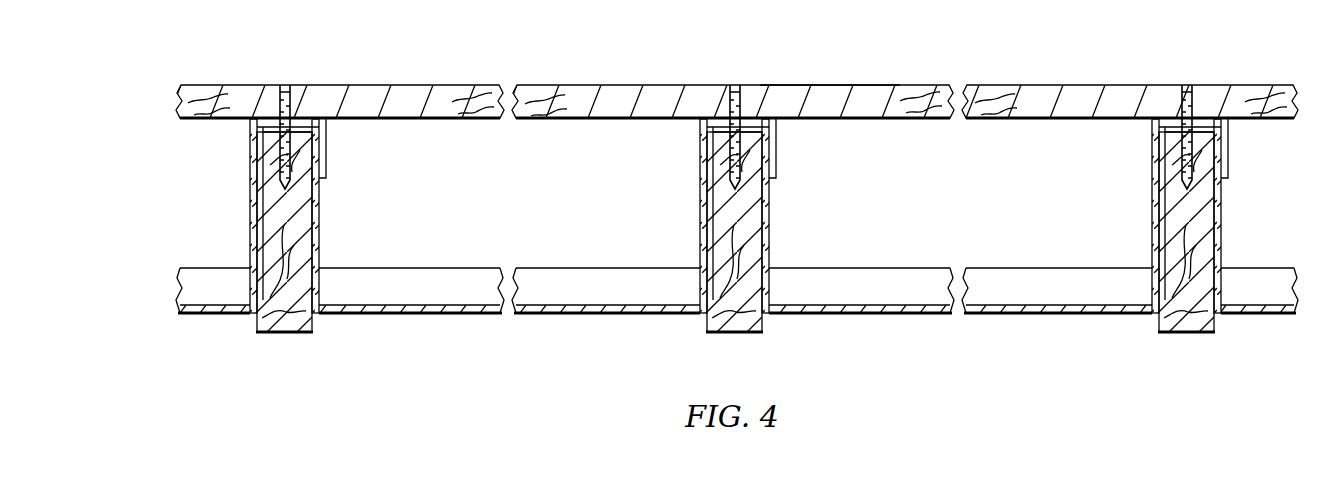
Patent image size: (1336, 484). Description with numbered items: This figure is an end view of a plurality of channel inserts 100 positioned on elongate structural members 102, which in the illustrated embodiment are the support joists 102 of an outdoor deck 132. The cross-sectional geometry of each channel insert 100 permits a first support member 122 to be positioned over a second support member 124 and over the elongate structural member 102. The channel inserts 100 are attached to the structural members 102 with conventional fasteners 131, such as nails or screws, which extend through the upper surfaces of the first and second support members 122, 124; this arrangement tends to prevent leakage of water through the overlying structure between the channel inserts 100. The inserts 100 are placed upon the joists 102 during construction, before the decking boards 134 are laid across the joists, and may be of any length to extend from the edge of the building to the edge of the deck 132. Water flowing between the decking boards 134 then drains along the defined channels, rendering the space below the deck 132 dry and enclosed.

The channel insert 100 is at (442, 326).
The structural member 102 is at (282, 333).
The first support member 122 is at (326, 140).
The second support member 124 is at (250, 150).
The fastener 131 is at (728, 153).
The deck 132 is at (607, 44).
The decking board 134 is at (820, 85).